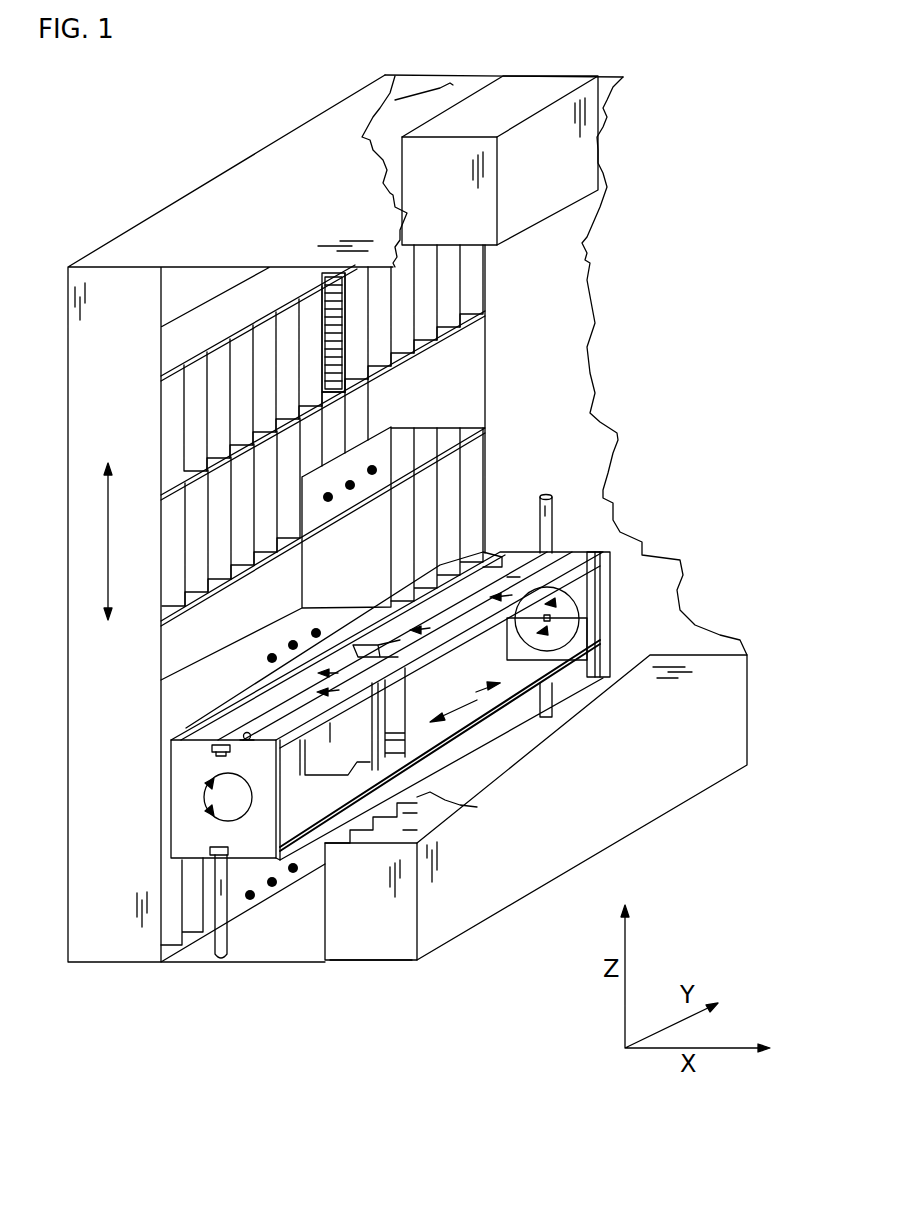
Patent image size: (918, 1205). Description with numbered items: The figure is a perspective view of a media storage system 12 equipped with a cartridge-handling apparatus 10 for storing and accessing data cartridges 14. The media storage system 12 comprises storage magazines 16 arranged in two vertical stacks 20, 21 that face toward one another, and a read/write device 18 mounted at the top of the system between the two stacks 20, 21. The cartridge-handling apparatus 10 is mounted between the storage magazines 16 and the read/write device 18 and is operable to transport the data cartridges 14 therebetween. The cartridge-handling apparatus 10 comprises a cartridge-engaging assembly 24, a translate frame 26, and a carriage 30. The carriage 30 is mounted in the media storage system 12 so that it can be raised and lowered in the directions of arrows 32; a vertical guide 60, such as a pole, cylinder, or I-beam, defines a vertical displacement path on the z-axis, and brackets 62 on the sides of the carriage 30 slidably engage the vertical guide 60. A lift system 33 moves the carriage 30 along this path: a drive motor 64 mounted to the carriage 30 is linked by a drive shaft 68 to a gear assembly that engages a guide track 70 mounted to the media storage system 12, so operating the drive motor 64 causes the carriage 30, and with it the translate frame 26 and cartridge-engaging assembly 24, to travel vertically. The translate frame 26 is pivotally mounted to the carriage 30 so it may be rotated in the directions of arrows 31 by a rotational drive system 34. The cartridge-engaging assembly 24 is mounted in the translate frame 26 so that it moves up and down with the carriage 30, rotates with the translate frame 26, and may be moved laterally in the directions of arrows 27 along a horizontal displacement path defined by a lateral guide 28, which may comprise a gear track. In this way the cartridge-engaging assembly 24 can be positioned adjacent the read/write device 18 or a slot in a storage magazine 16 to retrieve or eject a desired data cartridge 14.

The cartridge-handling apparatus 10 is at (500, 546).
The media storage system 12 is at (625, 265).
The data cartridge 14 is at (341, 388).
The storage magazine 16 is at (348, 920).
The read/write device 18 is at (540, 183).
The vertical stack 20 is at (107, 962).
The vertical stack 21 is at (368, 962).
The cartridge-engaging assembly 24 is at (369, 750).
The translate frame 26 is at (590, 642).
The arrows (horizontal displacement path) 27 is at (474, 690).
The lateral guide 28 is at (333, 799).
The carriage 30 is at (198, 822).
The arrows (rotation directions) 31 is at (572, 598).
The arrows (vertical directions) 32 is at (108, 515).
The lift system 33 is at (613, 545).
The rotational drive system 34 is at (250, 732).
The vertical guide 60 is at (226, 945).
The bracket 62 is at (222, 750).
The drive motor 64 is at (380, 644).
The drive shaft 68 is at (613, 552).
The guide track 70 is at (618, 650).